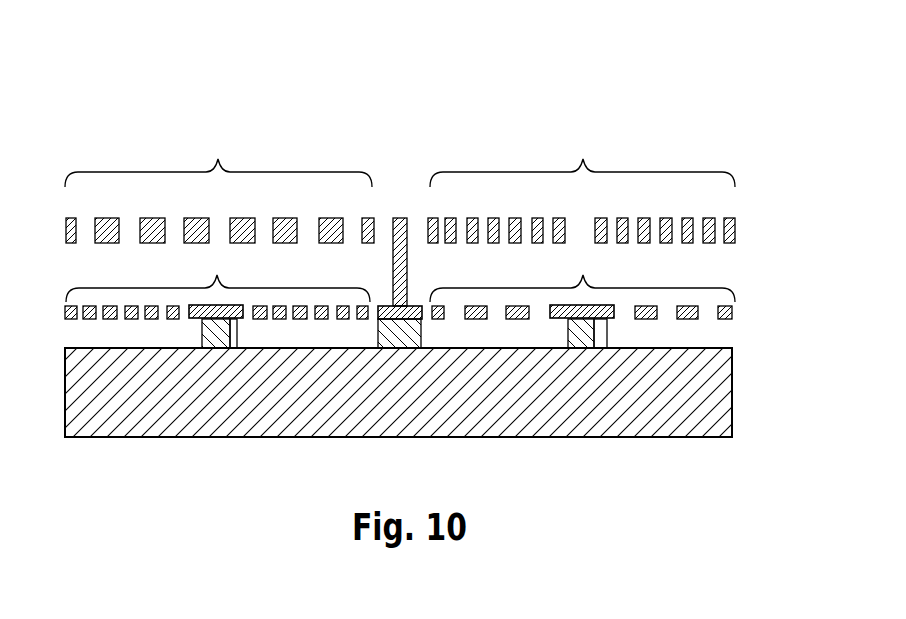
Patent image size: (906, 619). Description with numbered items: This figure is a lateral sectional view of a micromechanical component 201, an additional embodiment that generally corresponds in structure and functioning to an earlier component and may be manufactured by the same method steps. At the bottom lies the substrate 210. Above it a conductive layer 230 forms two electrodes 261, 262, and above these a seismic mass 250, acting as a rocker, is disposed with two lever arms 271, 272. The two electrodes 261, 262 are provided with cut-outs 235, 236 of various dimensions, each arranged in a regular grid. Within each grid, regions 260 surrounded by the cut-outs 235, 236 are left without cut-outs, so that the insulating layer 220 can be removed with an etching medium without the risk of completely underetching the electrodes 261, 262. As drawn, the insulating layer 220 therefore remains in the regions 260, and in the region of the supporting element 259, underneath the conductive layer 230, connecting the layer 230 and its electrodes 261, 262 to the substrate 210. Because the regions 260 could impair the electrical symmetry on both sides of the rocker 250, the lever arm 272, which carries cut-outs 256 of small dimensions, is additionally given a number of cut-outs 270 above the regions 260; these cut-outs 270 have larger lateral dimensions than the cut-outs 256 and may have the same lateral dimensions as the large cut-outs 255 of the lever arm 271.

The micromechanical component 201 is at (210, 93).
The substrate 210 is at (335, 413).
The insulating layer 220 is at (211, 333).
The conductive layer 230 is at (440, 386).
The cut-outs 235 is at (123, 307).
The cut-outs 236 is at (706, 310).
The seismic mass 250 is at (440, 209).
The large cut-outs 255 is at (263, 232).
The cut-outs 256 is at (507, 235).
The supporting element 259 is at (403, 218).
The regions without cut-outs 260 is at (236, 325).
The electrode 261 is at (218, 272).
The electrode 262 is at (582, 272).
The additional cut-outs 270 is at (580, 235).
The lever arm 271 is at (218, 155).
The lever arm 272 is at (582, 156).